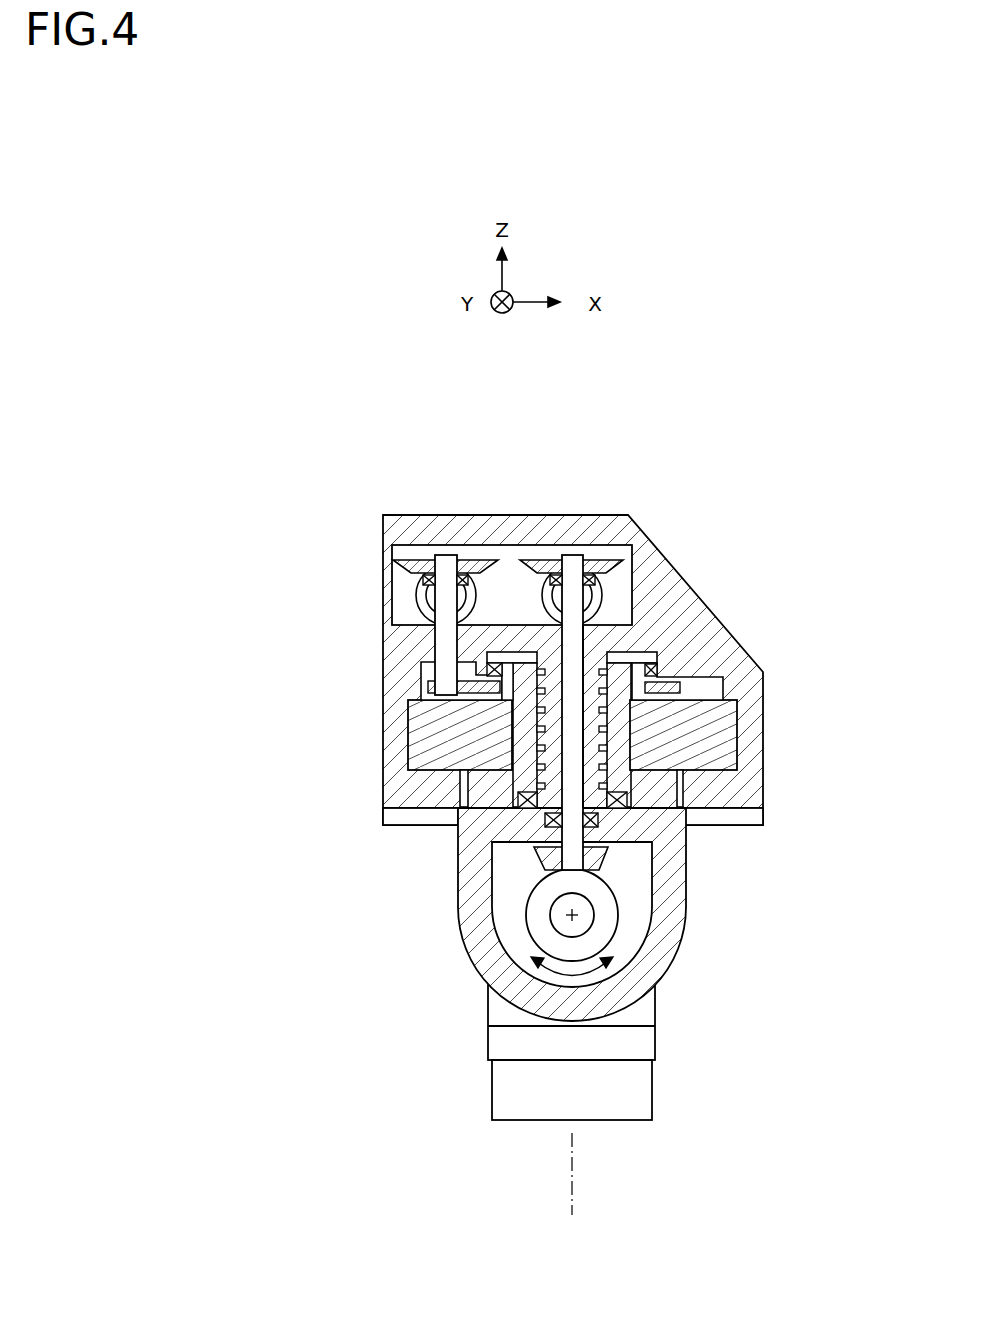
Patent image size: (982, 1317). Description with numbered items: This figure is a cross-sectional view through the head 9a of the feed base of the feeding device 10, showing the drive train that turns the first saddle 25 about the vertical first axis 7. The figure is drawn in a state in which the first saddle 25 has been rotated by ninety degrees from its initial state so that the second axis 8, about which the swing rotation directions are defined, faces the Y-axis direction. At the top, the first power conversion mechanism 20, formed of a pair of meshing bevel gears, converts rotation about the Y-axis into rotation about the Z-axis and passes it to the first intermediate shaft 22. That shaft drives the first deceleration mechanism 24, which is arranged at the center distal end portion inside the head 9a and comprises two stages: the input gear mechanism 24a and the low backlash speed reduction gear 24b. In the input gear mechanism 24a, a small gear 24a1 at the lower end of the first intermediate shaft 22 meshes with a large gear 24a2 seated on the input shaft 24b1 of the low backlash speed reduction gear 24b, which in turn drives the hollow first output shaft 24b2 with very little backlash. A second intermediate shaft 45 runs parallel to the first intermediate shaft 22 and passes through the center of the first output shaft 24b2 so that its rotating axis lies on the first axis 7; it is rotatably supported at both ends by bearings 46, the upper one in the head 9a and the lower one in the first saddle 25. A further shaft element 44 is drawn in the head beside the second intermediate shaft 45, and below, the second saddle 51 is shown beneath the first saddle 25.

The first axis 7 is at (572, 1175).
The second axis 8 is at (568, 915).
The head 9a is at (723, 623).
The feeding device 10 is at (846, 410).
The first power conversion mechanism 20 is at (422, 560).
The first intermediate shaft 22 is at (438, 603).
The first deceleration mechanism 24 is at (447, 716).
The input gear mechanism 24a is at (466, 662).
The small gear 24a1 is at (428, 683).
The large gear 24a2 is at (477, 680).
The low backlash speed reduction gear 24b is at (472, 729).
The input shaft 24b1 is at (408, 700).
The first output shaft 24b2 is at (462, 785).
The first saddle 25 is at (591, 914).
The rotation shaft 44 is at (612, 560).
The second intermediate shaft 45 is at (583, 652).
The bearings 46 is at (600, 580).
The second saddle 51 is at (488, 1035).